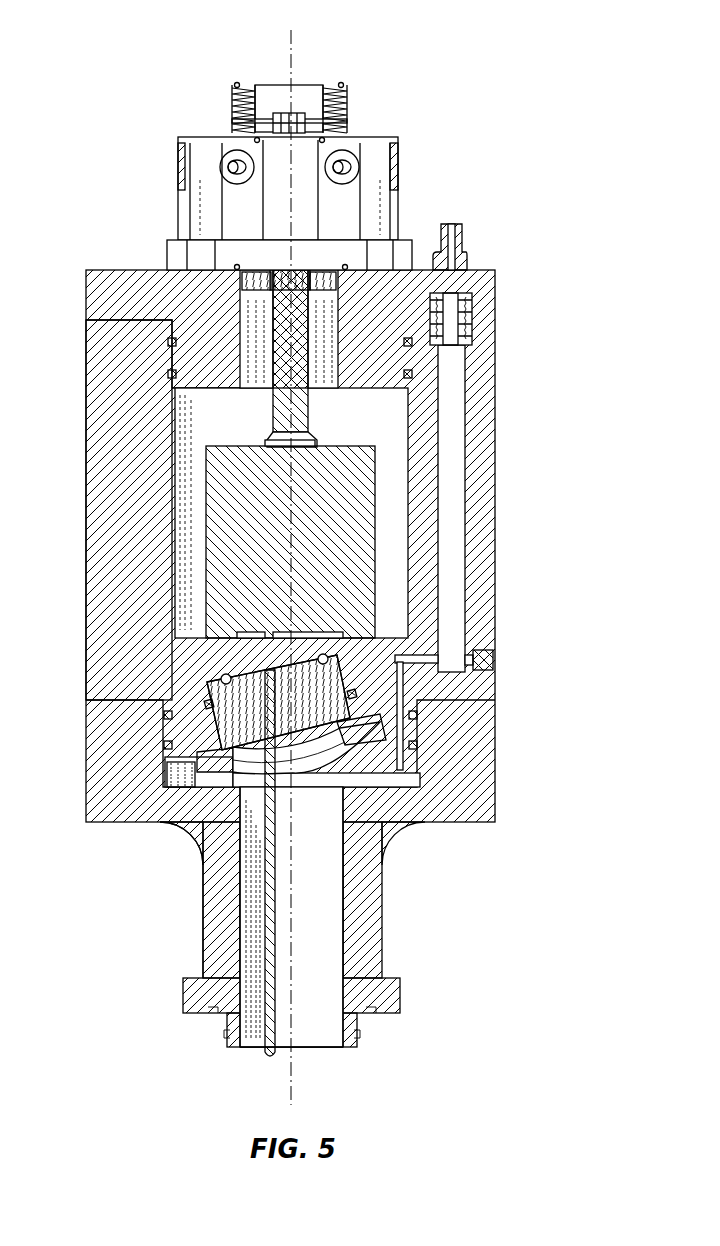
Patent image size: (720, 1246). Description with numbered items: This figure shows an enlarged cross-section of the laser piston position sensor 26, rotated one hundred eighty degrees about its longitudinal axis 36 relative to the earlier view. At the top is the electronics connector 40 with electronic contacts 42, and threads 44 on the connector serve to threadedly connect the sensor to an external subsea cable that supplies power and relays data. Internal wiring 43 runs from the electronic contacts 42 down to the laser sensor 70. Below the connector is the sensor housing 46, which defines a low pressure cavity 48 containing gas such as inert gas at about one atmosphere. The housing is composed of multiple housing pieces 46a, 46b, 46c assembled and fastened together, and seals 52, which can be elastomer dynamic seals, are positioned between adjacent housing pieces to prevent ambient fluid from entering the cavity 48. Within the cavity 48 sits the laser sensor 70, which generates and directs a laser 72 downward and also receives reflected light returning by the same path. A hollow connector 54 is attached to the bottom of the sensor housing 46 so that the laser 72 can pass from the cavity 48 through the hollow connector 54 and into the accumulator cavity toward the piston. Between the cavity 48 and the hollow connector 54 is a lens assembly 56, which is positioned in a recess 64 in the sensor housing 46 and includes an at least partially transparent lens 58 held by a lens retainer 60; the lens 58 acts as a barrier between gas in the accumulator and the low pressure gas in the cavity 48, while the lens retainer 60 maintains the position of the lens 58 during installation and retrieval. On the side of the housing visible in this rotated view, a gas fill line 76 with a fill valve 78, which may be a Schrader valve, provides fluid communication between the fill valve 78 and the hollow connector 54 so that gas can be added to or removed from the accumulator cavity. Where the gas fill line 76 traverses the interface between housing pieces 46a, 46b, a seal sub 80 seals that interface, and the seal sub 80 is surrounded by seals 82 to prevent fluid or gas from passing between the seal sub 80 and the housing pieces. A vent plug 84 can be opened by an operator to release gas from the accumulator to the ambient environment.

The laser piston position sensor 26 is at (108, 50).
The longitudinal axis 36 is at (292, 1070).
The electronics connector 40 is at (357, 140).
The electronic contacts 42 is at (345, 97).
The internal wiring 43 is at (310, 347).
The threads 44 is at (236, 110).
The sensor housing 46 is at (120, 530).
The housing piece 46a is at (120, 296).
The housing piece 46b is at (120, 410).
The housing piece 46c is at (120, 773).
The low pressure cavity 48 is at (212, 418).
The seals 52 is at (240, 293).
The hollow connector 54 is at (323, 868).
The lens assembly 56 is at (200, 672).
The lens 58 is at (204, 857).
The lens retainer 60 is at (195, 830).
The recess 64 is at (373, 758).
The laser sensor 70 is at (248, 583).
The laser 72 is at (265, 890).
The gas fill line 76 is at (455, 447).
The fill valve 78 is at (462, 240).
The seal sub 80 is at (450, 318).
The seals 82 is at (472, 300).
The vent plug 84 is at (493, 660).